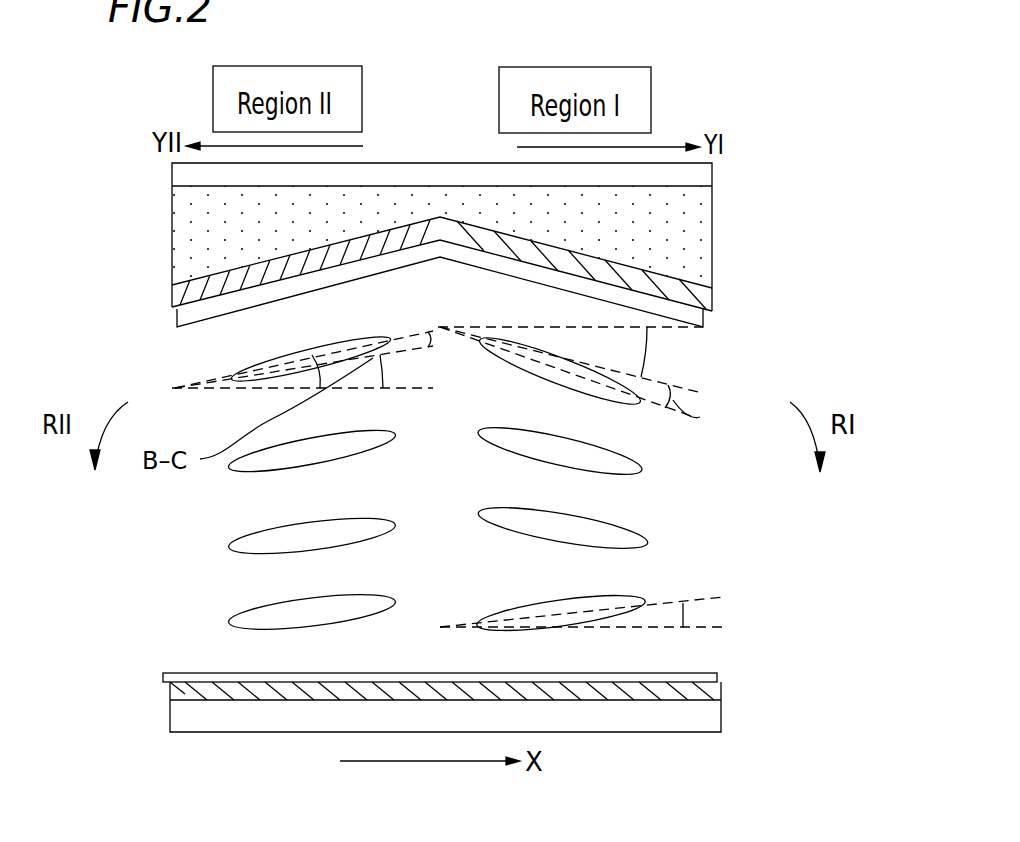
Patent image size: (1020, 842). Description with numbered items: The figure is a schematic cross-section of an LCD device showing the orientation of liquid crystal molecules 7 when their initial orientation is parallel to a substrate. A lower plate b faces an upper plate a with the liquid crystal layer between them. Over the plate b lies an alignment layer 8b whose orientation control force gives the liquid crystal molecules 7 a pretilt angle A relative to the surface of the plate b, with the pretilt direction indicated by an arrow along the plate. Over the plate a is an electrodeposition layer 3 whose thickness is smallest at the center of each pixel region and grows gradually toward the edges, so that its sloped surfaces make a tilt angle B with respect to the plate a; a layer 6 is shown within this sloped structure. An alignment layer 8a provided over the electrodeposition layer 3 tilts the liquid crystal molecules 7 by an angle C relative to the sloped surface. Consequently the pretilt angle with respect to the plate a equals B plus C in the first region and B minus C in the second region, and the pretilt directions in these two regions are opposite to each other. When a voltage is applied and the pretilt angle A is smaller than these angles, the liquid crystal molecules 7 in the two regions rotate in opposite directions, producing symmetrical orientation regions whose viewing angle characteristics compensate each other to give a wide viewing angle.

The plate a is at (705, 177).
The electrodeposition layer 3 is at (703, 240).
The hatched stepped layer (overcoat) 6 is at (703, 297).
The alignment layer 8a is at (703, 322).
The liquid crystal molecules 7 is at (636, 454).
The alignment layer 8b is at (717, 676).
The plate b is at (722, 712).
The pretilt angle A is at (683, 615).
The tilt angle B is at (317, 388).
The tilt angle C is at (427, 327).